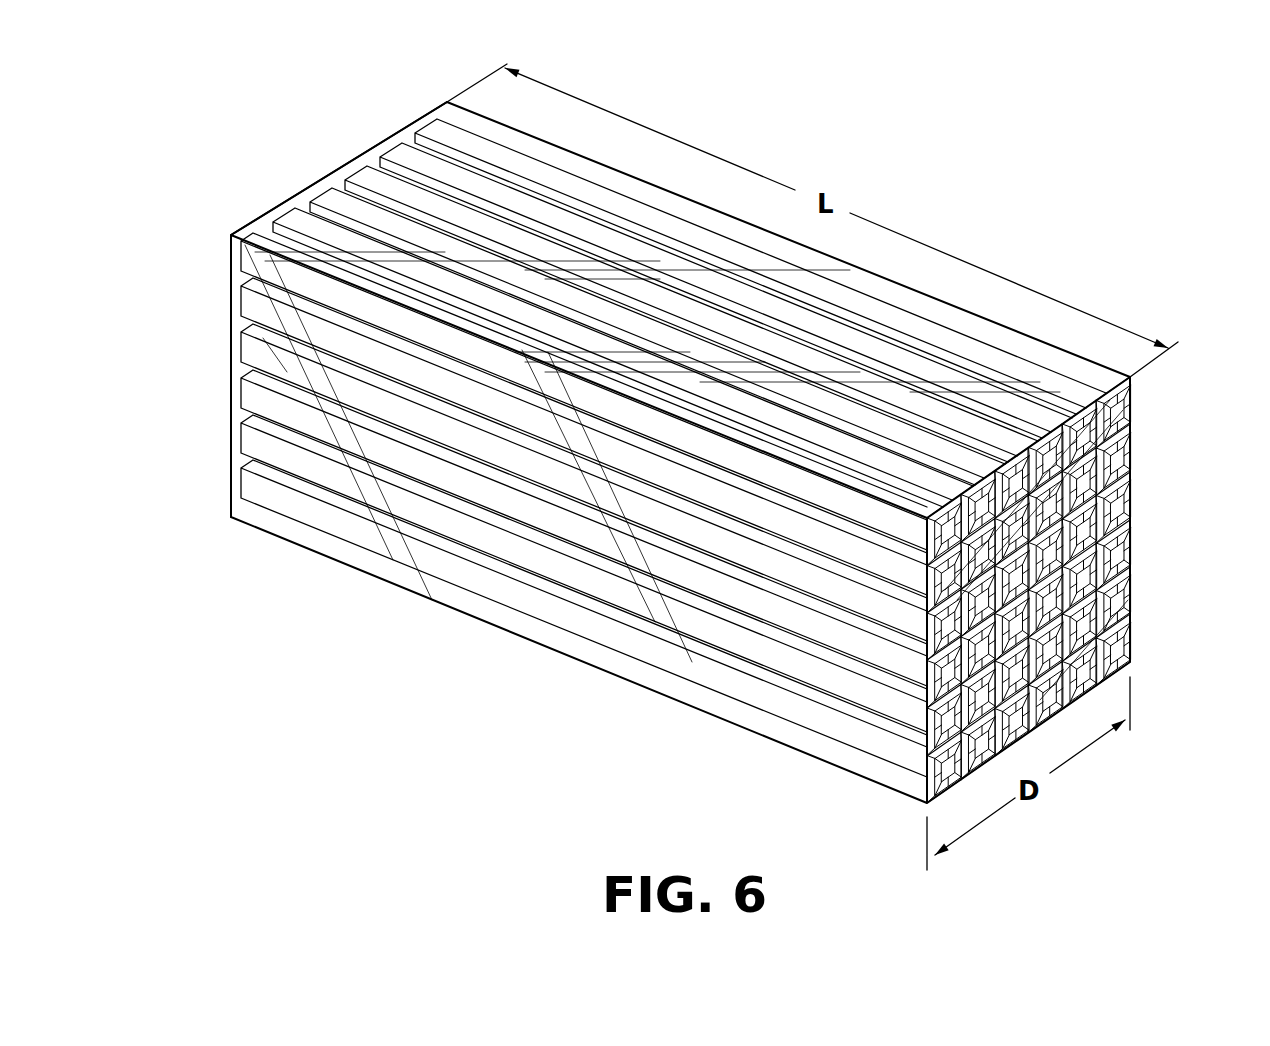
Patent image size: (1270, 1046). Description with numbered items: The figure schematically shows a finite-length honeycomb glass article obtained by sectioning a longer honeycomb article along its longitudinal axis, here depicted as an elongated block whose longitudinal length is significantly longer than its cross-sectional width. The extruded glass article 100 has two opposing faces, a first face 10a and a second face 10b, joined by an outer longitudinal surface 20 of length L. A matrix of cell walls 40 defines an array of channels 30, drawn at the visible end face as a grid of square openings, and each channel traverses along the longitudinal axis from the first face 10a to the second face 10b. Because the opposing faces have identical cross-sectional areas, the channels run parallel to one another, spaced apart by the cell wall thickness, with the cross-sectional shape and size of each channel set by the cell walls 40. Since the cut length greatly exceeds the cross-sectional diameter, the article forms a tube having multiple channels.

The extruded glass article 100 is at (862, 142).
The first face 10a is at (1131, 498).
The second face 10b is at (347, 162).
The outer longitudinal surface 20 is at (560, 653).
The channels 30 is at (1131, 559).
The cell walls 40 is at (437, 540).